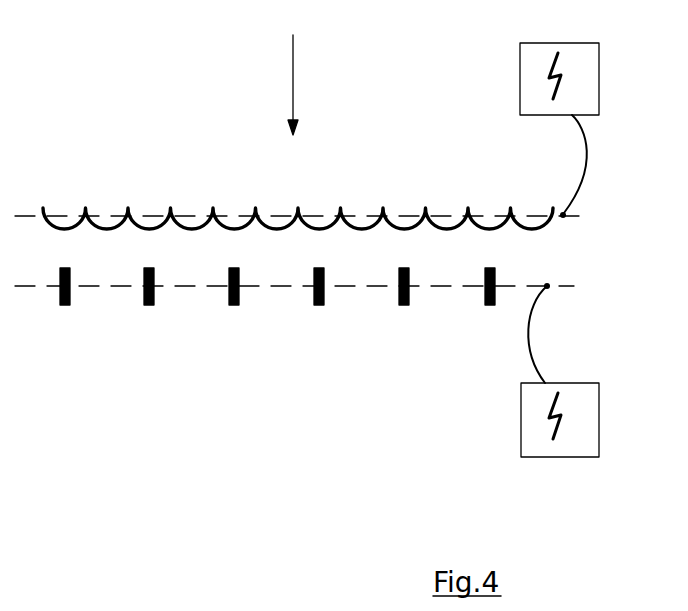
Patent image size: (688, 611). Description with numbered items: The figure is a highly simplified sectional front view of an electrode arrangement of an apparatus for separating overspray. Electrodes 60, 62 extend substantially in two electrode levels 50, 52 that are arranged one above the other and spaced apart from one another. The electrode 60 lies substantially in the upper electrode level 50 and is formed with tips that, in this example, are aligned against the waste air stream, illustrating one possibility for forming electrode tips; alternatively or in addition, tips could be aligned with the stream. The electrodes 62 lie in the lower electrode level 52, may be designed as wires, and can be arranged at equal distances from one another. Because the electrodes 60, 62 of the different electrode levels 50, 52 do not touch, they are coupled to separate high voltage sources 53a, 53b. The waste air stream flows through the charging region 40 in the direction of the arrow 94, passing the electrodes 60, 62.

The charging region 40 is at (101, 424).
The upper electrode level 50 is at (595, 215).
The lower electrode level 52 is at (589, 286).
The high voltage source 53a is at (520, 67).
The high voltage source 53b is at (566, 457).
The electrode 60 is at (393, 212).
The electrode 62 is at (65, 305).
The arrow 94 is at (293, 52).